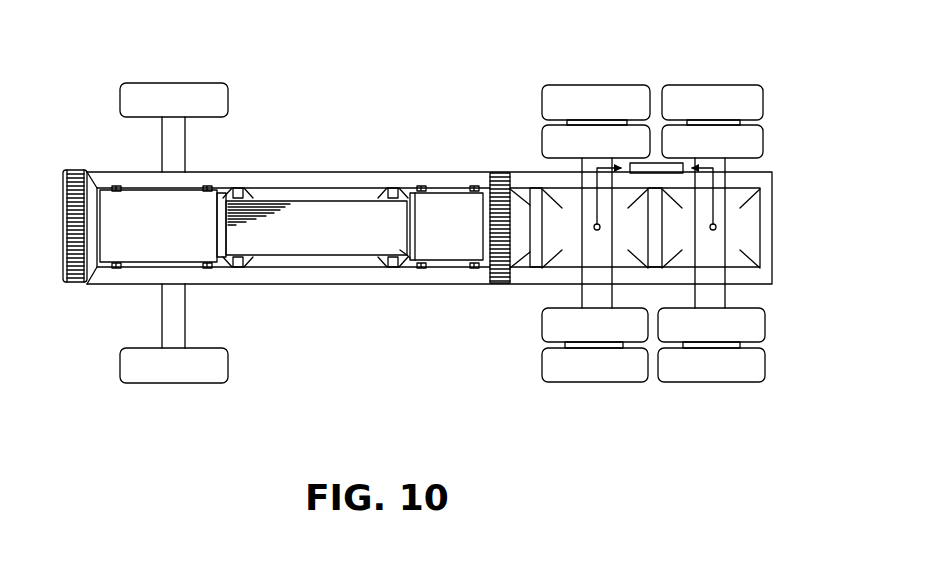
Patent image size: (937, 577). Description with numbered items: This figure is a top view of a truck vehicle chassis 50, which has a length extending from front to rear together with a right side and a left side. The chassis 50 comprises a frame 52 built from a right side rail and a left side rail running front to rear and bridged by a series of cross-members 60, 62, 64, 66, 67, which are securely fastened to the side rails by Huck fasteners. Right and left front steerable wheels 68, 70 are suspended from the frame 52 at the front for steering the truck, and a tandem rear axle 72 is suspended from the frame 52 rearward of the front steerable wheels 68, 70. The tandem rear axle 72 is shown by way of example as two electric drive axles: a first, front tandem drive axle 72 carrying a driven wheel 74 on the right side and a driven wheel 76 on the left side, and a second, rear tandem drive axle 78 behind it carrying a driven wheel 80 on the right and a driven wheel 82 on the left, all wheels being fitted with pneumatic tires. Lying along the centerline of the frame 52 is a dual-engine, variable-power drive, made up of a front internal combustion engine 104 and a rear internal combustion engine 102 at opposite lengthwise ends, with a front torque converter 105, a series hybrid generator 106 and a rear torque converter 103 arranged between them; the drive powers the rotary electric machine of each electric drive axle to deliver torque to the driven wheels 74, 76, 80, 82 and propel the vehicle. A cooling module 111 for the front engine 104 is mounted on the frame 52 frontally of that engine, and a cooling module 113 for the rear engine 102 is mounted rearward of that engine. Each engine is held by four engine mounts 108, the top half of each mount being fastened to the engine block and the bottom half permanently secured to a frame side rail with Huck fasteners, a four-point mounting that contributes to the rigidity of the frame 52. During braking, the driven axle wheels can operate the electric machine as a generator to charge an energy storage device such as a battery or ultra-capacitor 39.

The ultra-capacitor 39 is at (657, 163).
The truck vehicle chassis 50 is at (300, 116).
The frame 52 is at (312, 165).
The cross-member 60 is at (238, 187).
The cross-member 62 is at (395, 187).
The cross-member 64 is at (548, 240).
The cross-member 66 is at (663, 240).
The cross-member 67 is at (773, 230).
The right front steerable wheel 68 is at (175, 83).
The left front steerable wheel 70 is at (205, 383).
The tandem rear axle 72 is at (615, 240).
The driven wheel 74 is at (542, 137).
The driven wheel 76 is at (542, 362).
The second drive axle 78 is at (727, 240).
The driven wheel 80 is at (763, 100).
The driven wheel 82 is at (765, 330).
The rear internal combustion engine 102 is at (465, 238).
The rear torque converter 103 is at (404, 268).
The front internal combustion engine 104 is at (178, 236).
The front torque converter 105 is at (222, 243).
The series hybrid generator 106 is at (346, 238).
The engine mounts 108 is at (117, 186).
The cooling module 111 is at (73, 284).
The cooling module 113 is at (503, 284).